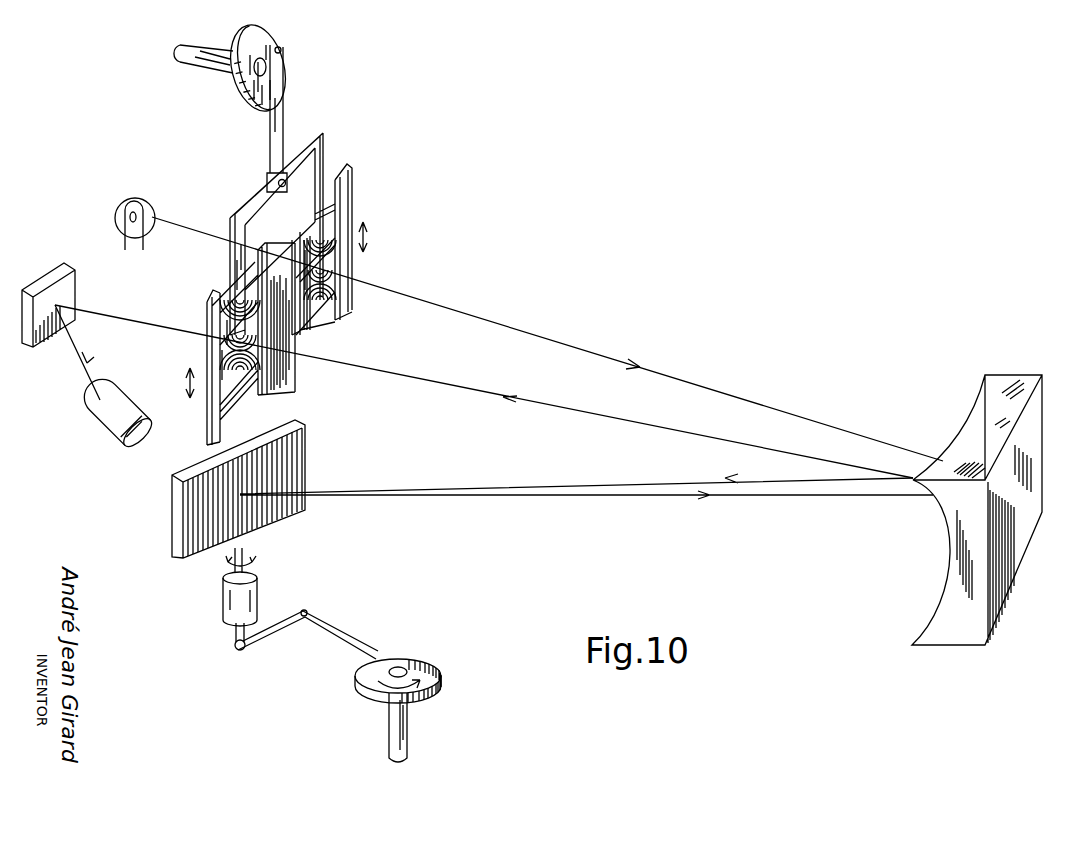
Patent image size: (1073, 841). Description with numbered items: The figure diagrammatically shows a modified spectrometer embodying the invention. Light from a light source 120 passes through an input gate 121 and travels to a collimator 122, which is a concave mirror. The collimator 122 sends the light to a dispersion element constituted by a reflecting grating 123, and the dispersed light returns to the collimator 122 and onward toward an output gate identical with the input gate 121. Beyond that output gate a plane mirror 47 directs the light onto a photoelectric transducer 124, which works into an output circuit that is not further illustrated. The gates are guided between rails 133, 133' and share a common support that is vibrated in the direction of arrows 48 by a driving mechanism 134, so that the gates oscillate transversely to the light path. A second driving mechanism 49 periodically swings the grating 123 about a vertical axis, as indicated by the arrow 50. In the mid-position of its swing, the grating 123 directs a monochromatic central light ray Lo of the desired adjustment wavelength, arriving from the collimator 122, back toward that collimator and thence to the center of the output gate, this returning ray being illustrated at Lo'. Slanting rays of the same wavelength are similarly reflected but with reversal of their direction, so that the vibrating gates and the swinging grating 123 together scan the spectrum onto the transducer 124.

The driving mechanism 134 is at (199, 82).
The light source 120 is at (130, 196).
The plane mirror 47 is at (50, 272).
The photoelectric transducer 124 is at (97, 422).
The arrow 48 is at (372, 240).
The input gate 121 is at (340, 260).
The rail 133 is at (343, 301).
The rail 133' is at (276, 344).
The collimator 122 is at (1008, 378).
The reflecting grating 123 is at (172, 522).
The arrow 50 is at (226, 563).
The driving mechanism 49 is at (430, 644).
The central light ray Lo is at (547, 339).
The reflected central light ray Lo' is at (484, 391).